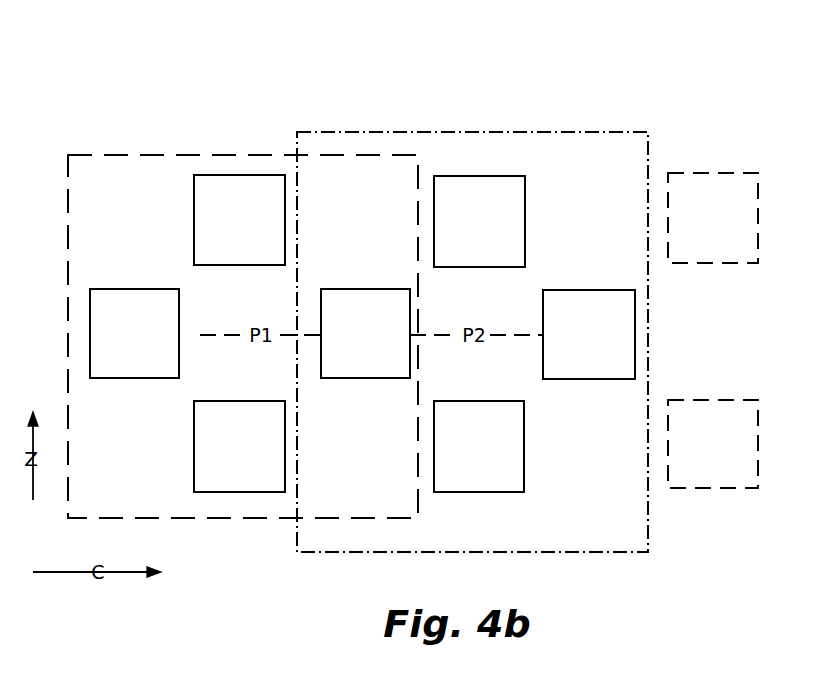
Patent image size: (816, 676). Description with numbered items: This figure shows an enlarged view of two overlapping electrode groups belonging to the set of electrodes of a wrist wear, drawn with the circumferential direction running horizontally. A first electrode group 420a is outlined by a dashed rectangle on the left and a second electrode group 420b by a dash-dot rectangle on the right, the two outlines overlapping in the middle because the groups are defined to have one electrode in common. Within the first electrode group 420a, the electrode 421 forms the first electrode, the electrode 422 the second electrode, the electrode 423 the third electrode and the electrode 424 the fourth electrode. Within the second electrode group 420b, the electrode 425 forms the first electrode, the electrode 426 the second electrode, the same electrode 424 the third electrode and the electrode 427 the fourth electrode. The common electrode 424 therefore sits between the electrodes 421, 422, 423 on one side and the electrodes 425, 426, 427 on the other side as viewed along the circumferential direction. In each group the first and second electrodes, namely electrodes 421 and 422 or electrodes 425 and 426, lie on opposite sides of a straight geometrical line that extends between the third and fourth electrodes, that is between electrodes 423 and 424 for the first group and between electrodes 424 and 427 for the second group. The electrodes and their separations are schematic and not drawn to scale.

The first electrode group 420a is at (232, 155).
The second electrode group 420b is at (445, 131).
The first electrode of the first electrode group 421 is at (239, 220).
The second electrode of the first electrode group 422 is at (239, 446).
The third electrode of the first electrode group 423 is at (134, 333).
The common electrode 424 is at (365, 333).
The first electrode of the second electrode group 425 is at (479, 221).
The second electrode of the second electrode group 426 is at (479, 446).
The fourth electrode of the second electrode group 427 is at (589, 334).